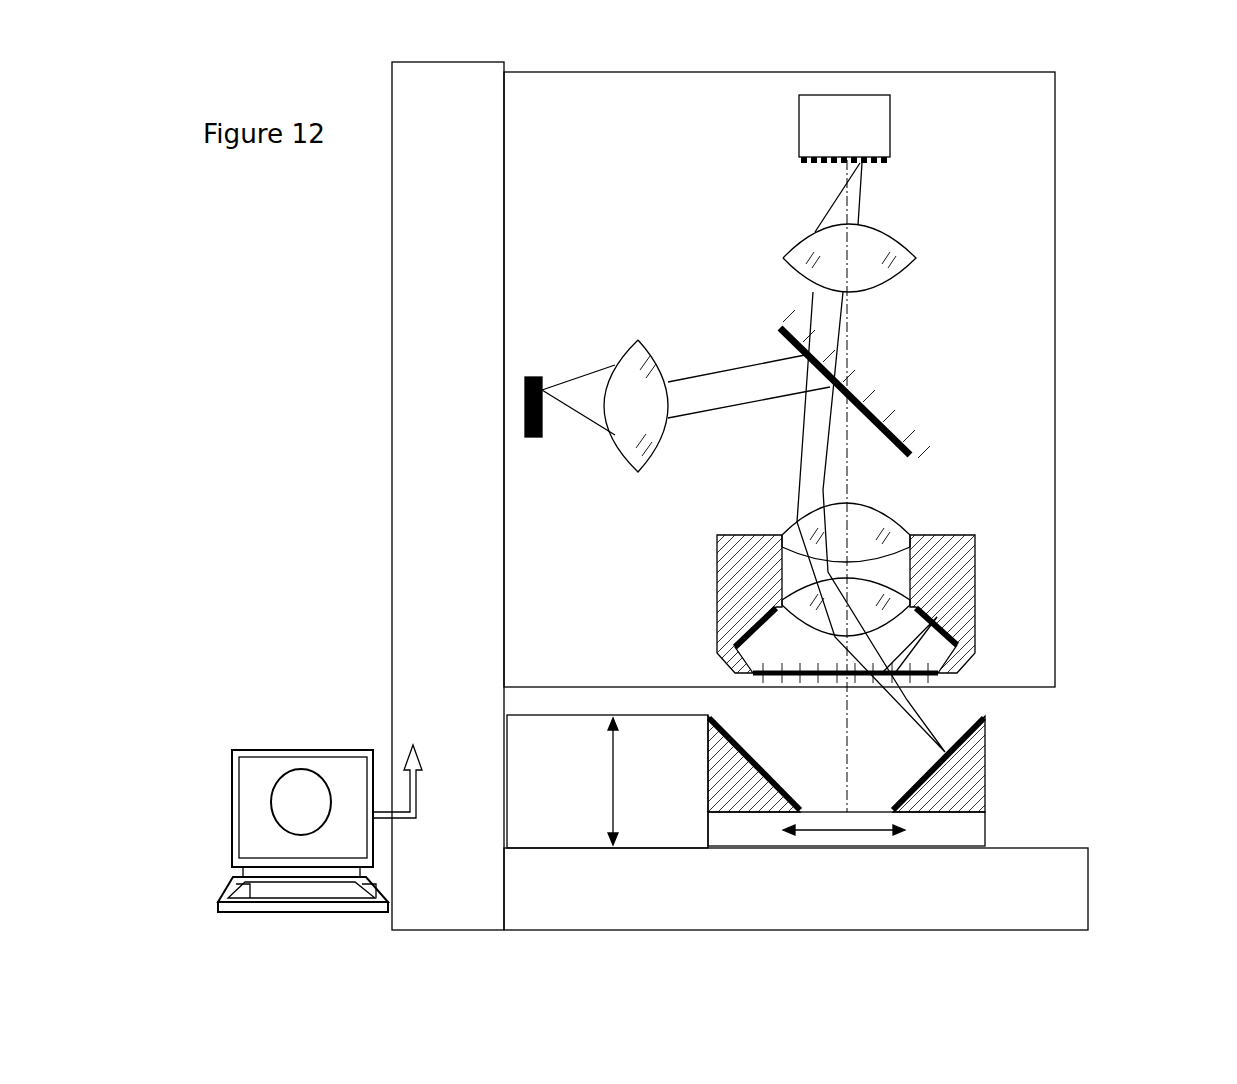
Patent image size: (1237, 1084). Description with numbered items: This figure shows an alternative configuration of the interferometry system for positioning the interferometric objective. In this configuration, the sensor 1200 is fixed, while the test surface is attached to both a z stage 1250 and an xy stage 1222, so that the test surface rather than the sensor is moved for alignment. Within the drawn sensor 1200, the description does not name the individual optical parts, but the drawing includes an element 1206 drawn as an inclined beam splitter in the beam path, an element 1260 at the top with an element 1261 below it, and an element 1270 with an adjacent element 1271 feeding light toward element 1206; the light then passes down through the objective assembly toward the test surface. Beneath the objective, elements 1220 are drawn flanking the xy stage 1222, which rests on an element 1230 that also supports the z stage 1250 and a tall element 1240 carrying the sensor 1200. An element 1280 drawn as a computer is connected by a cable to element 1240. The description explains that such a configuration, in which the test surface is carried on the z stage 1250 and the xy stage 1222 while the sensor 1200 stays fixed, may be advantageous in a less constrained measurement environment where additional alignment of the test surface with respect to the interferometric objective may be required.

The sensor 1200 is at (1108, 326).
The beam splitter 1206 is at (890, 408).
The mirrors 1220 is at (765, 772).
The xy stage 1222 is at (953, 833).
The base 1230 is at (796, 889).
The support column 1240 is at (448, 496).
The z stage 1250 is at (607, 781).
The detector 1260 is at (844, 129).
The imaging lens 1261 is at (918, 247).
The light source 1270 is at (543, 373).
The collimating lens 1271 is at (636, 342).
The computer 1280 is at (267, 757).